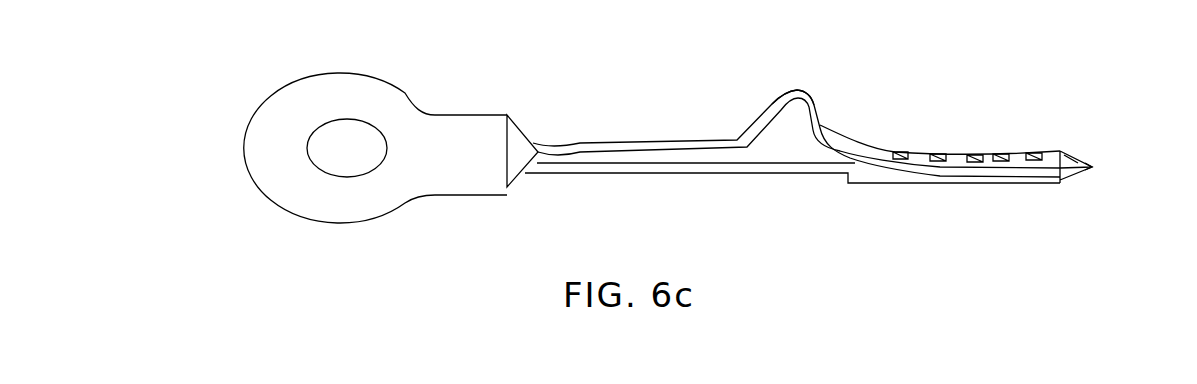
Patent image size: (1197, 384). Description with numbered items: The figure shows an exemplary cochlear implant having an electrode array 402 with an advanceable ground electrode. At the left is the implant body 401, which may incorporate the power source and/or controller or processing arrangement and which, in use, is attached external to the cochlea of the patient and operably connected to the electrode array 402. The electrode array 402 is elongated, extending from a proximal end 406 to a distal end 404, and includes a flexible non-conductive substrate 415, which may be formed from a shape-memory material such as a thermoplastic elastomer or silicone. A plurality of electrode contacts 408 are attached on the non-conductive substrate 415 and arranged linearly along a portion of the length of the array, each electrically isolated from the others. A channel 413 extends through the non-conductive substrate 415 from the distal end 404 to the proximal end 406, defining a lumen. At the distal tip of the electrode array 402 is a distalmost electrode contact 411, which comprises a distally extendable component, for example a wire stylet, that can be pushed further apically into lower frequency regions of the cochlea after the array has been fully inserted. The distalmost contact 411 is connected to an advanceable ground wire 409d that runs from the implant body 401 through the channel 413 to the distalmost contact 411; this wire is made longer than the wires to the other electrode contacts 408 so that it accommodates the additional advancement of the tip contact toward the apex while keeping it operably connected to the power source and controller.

The implant body 401 is at (335, 85).
The electrode array 402 is at (935, 178).
The distal end 404 is at (1063, 182).
The proximal end 406 is at (848, 148).
The electrode contacts 408 is at (900, 152).
The advanceable ground wire 409d is at (810, 93).
The distalmost electrode contact 411 is at (1089, 171).
The channel 413 is at (878, 177).
The flexible non-conductive substrate 415 is at (960, 157).